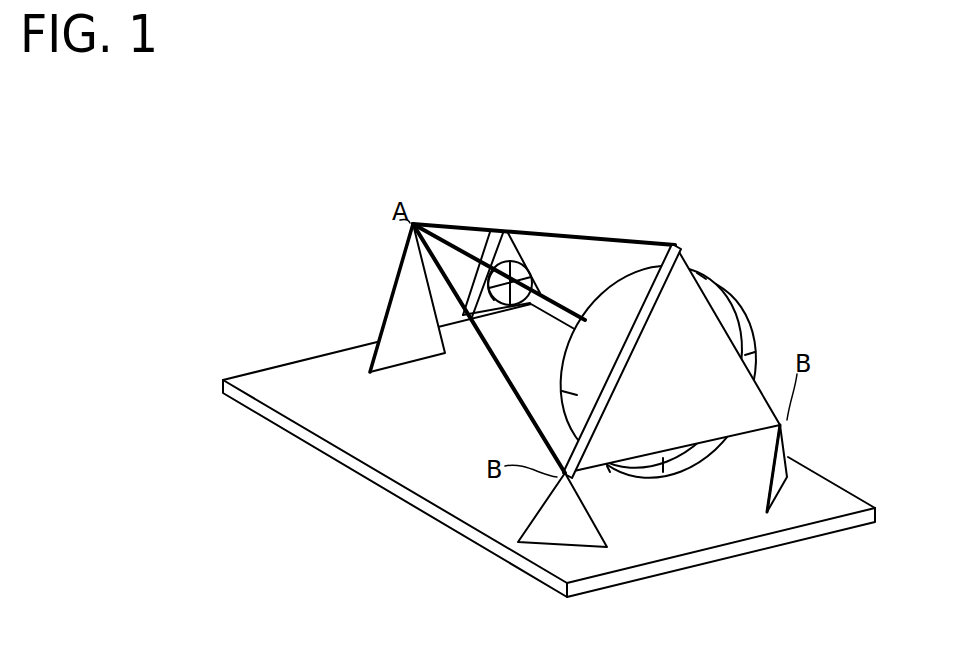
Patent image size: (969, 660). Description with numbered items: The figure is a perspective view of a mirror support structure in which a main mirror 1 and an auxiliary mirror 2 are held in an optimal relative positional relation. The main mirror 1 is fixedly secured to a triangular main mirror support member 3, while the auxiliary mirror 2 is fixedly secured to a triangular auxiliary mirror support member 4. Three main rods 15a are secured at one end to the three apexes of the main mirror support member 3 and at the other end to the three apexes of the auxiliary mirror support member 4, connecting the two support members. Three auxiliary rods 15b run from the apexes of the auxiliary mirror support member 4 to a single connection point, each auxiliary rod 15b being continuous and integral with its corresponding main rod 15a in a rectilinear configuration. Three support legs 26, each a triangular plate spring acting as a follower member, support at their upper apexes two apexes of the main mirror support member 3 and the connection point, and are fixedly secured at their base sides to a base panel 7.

The main mirror 1 is at (618, 292).
The auxiliary mirror 2 is at (523, 272).
The main mirror support member 3 is at (683, 312).
The auxiliary mirror support member 4 is at (490, 262).
The base panel 7 is at (818, 497).
The main rods 15a is at (558, 297).
The auxiliary rods 15b is at (458, 222).
The support legs 26 is at (400, 300).